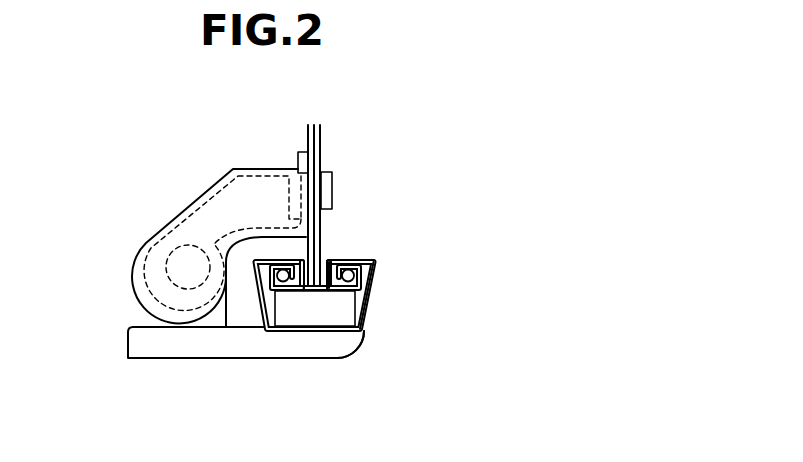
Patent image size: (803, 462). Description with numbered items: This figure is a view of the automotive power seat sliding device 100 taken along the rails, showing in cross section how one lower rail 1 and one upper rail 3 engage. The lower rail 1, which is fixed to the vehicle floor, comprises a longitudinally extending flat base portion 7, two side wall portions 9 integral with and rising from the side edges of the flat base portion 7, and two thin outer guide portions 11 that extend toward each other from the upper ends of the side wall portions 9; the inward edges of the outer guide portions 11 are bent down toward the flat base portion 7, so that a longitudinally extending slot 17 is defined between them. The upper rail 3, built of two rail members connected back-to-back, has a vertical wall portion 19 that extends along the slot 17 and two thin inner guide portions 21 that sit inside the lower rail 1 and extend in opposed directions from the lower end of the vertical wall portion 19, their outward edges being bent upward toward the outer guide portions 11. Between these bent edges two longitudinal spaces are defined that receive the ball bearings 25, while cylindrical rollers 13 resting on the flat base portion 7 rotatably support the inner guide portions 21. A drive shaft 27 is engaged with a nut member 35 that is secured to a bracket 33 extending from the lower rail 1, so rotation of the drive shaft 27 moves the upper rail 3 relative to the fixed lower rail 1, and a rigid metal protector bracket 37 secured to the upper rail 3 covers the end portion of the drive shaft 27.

The automotive power seat sliding device 100 is at (505, 77).
The lower rail 1 is at (381, 300).
The upper rail 3 is at (298, 153).
The flat base portion 7 is at (350, 334).
The side wall portion 9 is at (378, 280).
The outer guide portion 11 is at (268, 259).
The cylindrical roller 13 is at (344, 311).
The slot 17 is at (327, 266).
The vertical wall portion 19 is at (324, 156).
The inner guide portion 21 is at (333, 291).
The ball bearing 25 is at (352, 270).
The drive shaft 27 is at (167, 265).
The bracket 33 is at (168, 350).
The nut member 35 is at (138, 316).
The protector bracket 37 is at (160, 223).